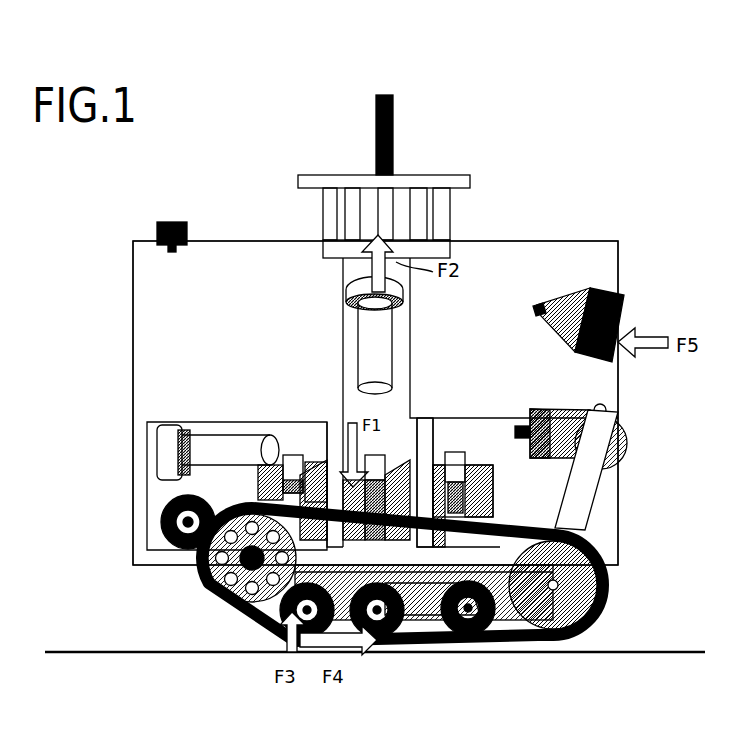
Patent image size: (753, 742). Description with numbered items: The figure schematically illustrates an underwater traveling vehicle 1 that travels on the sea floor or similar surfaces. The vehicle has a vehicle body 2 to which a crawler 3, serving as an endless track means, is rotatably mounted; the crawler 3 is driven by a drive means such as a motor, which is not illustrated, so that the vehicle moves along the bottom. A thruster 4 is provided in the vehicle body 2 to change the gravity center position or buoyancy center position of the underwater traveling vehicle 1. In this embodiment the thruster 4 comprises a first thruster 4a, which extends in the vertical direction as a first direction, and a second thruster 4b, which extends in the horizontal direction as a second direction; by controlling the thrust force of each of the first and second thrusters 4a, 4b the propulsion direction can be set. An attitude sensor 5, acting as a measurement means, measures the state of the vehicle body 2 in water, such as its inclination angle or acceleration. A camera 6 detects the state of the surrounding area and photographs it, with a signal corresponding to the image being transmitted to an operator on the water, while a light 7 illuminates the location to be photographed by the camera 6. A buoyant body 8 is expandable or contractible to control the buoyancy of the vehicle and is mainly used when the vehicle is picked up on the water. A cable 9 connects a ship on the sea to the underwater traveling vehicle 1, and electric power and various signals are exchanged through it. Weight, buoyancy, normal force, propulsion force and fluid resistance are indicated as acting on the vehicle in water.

The underwater traveling vehicle 1 is at (499, 115).
The vehicle body 2 is at (572, 496).
The crawler 3 is at (605, 563).
The thruster 4 is at (280, 378).
The first thruster 4a is at (370, 343).
The second thruster 4b is at (232, 438).
The attitude sensor 5 is at (480, 432).
The camera 6 is at (622, 433).
The light 7 is at (615, 296).
The buoyant body 8 is at (221, 254).
The cable 9 is at (393, 122).